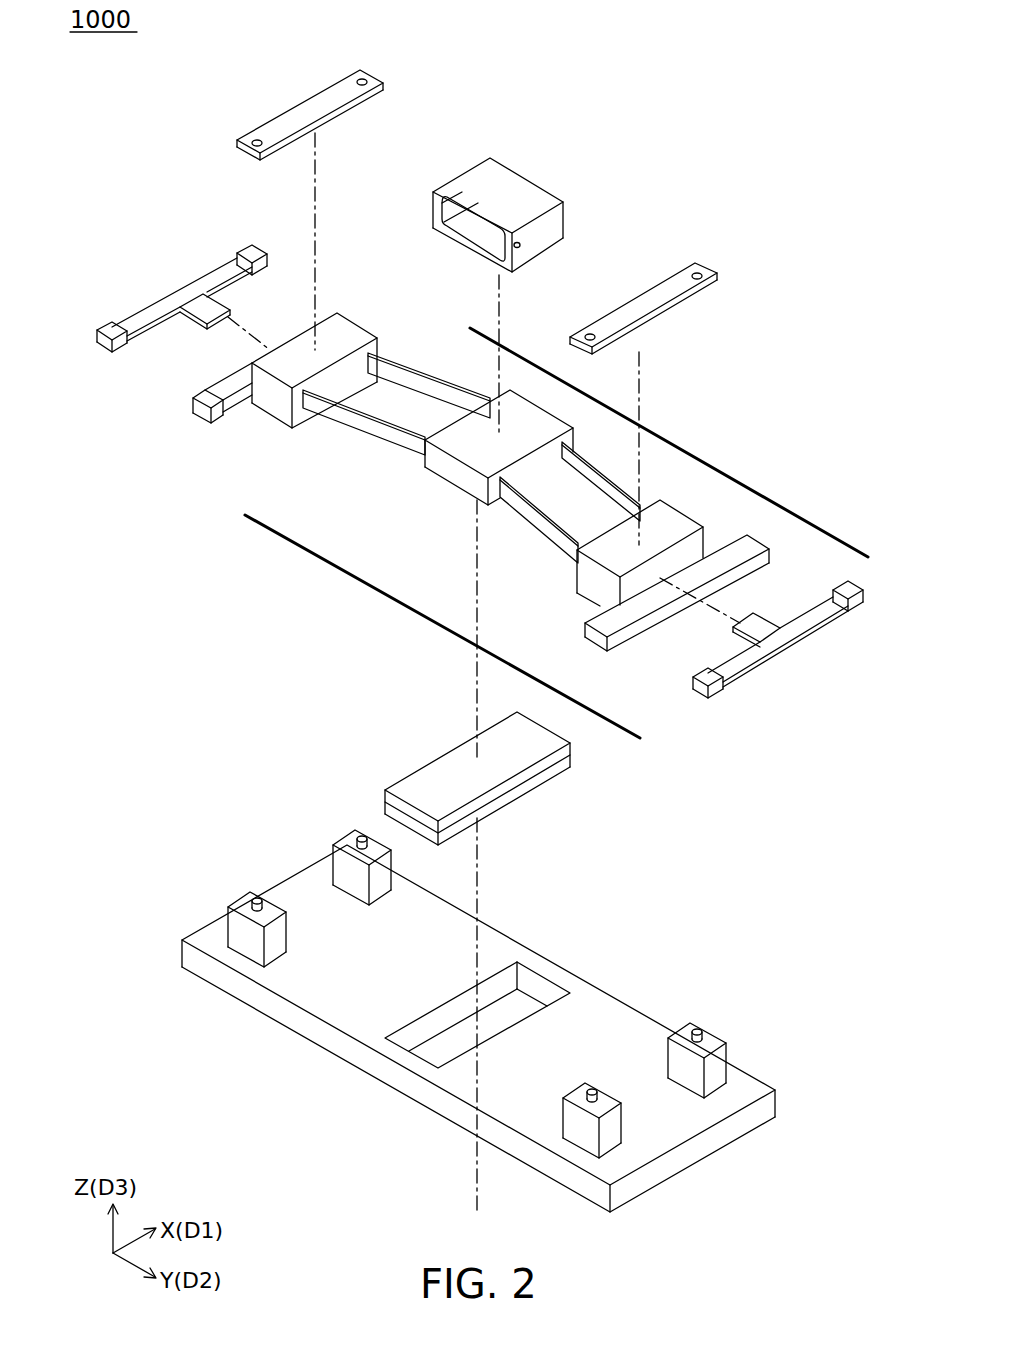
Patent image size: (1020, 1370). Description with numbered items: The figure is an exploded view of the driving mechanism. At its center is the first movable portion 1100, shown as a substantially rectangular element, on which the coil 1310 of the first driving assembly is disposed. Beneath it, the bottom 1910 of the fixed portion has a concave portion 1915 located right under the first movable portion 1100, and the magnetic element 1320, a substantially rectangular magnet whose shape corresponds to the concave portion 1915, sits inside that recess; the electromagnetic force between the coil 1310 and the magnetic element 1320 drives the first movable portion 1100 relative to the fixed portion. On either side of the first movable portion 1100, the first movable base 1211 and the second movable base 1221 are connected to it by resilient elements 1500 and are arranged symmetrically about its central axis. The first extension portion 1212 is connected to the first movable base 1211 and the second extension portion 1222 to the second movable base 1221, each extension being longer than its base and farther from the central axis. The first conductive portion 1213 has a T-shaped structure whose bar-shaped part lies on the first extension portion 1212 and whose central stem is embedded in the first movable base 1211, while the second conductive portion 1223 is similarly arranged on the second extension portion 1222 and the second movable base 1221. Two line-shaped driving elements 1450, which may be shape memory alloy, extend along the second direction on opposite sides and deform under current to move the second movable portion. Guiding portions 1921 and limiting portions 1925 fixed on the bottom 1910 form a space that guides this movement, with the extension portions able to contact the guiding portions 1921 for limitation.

The first movable portion 1100 is at (452, 473).
The first movable base 1211 is at (672, 520).
The first extension portion 1212 is at (740, 545).
The first conductive portion 1213 is at (808, 625).
The second movable base 1221 is at (278, 410).
The second extension portion 1222 is at (200, 387).
The second conductive portion 1223 is at (185, 290).
The coil 1310 is at (512, 185).
The magnetic element 1320 is at (515, 796).
The driving element 1450 is at (688, 450).
The resilient element 1500 is at (408, 378).
The bottom 1910 is at (620, 1030).
The concave portion 1915 is at (405, 1040).
The guiding portion 1921 is at (352, 865).
The limiting portion 1925 is at (310, 95).